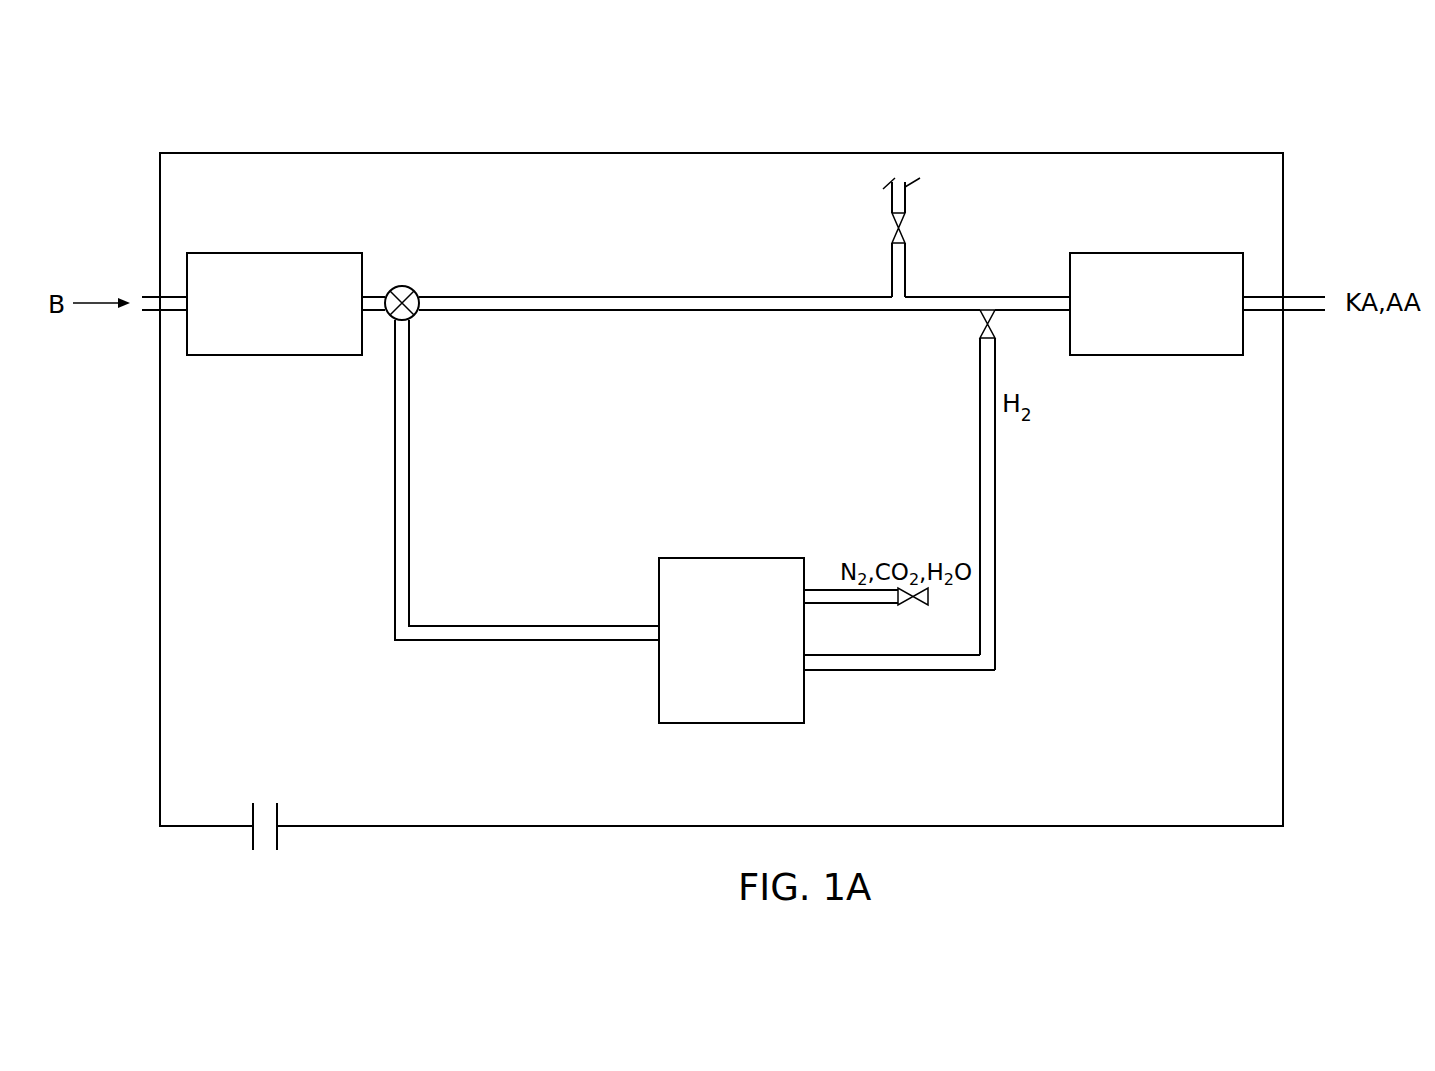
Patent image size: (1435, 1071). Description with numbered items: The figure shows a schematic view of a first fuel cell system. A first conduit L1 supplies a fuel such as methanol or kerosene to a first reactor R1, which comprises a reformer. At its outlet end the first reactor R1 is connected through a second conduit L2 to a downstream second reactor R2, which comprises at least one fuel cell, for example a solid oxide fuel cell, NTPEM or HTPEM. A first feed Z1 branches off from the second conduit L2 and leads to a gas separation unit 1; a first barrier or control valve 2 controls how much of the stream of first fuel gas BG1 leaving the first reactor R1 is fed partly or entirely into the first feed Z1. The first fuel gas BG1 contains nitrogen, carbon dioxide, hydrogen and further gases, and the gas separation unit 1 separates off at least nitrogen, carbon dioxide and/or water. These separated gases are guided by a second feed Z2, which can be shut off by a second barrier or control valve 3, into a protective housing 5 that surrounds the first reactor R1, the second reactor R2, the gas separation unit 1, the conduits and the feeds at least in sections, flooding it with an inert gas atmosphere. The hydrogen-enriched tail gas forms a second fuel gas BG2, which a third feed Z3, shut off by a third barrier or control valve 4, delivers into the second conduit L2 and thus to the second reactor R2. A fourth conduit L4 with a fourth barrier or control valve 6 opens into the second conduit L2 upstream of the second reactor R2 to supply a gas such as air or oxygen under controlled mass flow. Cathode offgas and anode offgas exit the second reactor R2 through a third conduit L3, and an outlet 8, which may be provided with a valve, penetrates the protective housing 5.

The gas separation unit 1 is at (731, 640).
The first barrier or control valve 2 is at (405, 285).
The second barrier or control valve 3 is at (913, 602).
The third barrier or control valve 4 is at (988, 321).
The protective housing 5 is at (1283, 608).
The fourth barrier or control valve 6 is at (895, 223).
The outlet 8 is at (250, 835).
The first reactor R1 is at (280, 270).
The second reactor R2 is at (1148, 283).
The first conduit L1 is at (175, 313).
The second conduit L2 is at (683, 295).
The third conduit L3 is at (1300, 294).
The fourth conduit L4 is at (905, 270).
The first feed Z1 is at (395, 505).
The second feed Z2 is at (830, 587).
The third feed Z3 is at (940, 670).
The first fuel gas BG1 is at (609, 269).
The second fuel gas BG2 is at (995, 545).